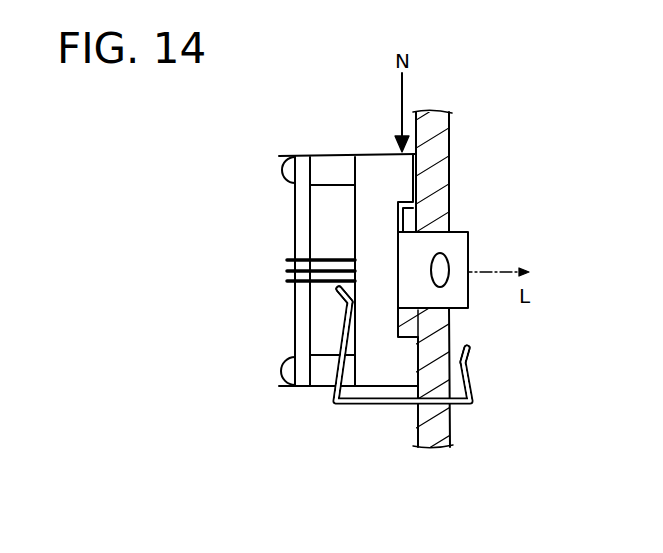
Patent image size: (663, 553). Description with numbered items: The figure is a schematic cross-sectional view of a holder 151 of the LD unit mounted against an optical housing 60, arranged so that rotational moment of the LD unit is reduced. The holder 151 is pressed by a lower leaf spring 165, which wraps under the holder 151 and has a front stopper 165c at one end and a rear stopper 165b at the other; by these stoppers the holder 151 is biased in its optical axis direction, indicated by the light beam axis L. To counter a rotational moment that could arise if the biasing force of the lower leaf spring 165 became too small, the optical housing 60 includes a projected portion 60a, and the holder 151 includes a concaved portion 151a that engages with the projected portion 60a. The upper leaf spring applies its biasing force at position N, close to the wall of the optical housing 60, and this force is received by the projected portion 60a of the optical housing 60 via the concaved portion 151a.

The optical housing 60 is at (450, 153).
The projected portion 60a is at (424, 220).
The holder 151 is at (366, 163).
The concaved portion 151a is at (414, 193).
The lower leaf spring 165 is at (366, 407).
The rear stopper 165b is at (478, 380).
The front stopper 165c is at (328, 393).